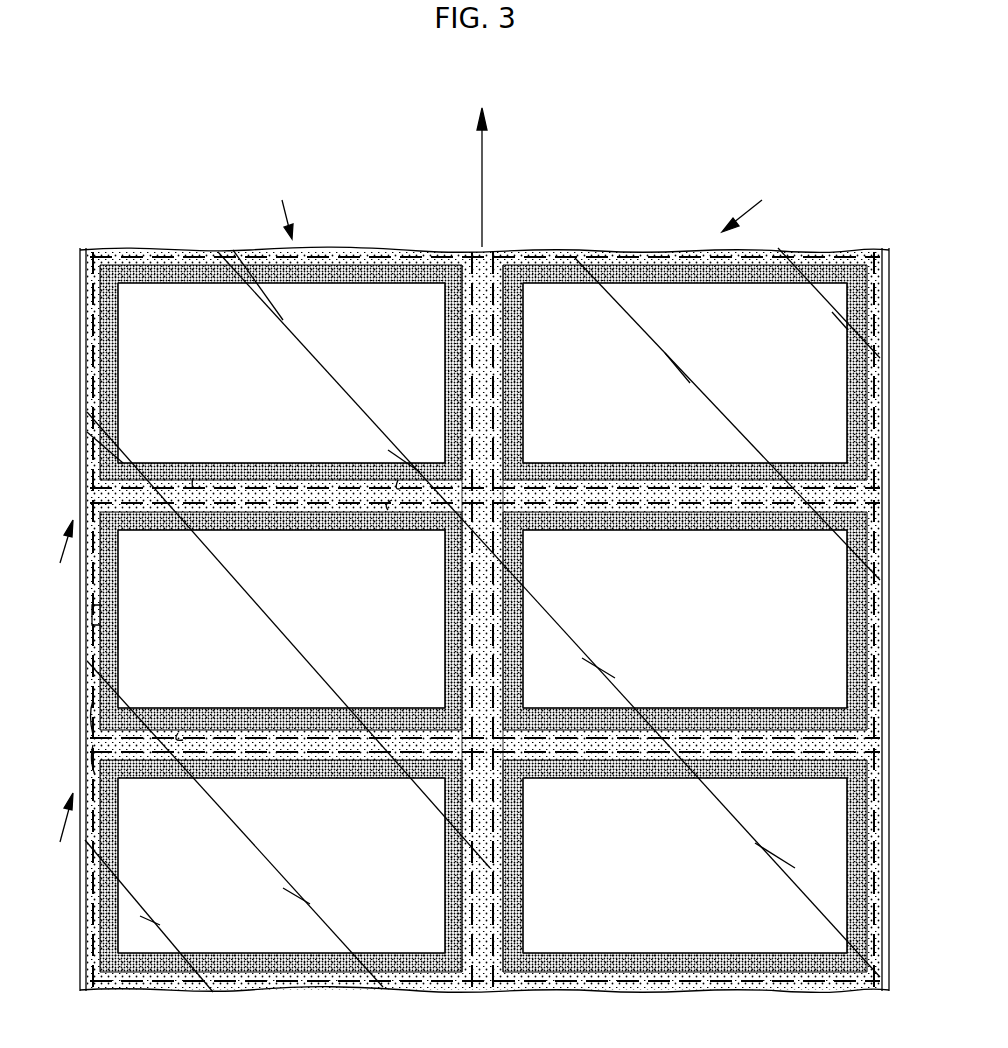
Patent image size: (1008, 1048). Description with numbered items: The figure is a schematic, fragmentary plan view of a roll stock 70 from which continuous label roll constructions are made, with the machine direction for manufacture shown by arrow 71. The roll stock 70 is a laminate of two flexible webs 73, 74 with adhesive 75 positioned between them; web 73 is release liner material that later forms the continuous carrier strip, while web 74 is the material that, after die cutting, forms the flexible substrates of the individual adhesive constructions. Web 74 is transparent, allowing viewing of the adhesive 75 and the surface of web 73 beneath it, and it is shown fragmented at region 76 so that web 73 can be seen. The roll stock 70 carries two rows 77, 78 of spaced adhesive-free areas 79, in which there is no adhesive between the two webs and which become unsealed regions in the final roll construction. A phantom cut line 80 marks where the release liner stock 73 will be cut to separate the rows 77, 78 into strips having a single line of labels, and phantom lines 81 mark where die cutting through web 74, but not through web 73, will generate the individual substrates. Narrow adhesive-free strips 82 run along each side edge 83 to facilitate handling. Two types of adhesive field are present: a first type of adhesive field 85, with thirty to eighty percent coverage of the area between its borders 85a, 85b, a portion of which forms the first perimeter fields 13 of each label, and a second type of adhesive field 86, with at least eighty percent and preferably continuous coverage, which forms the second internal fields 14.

The first perimeter adhesive field 13 is at (100, 613).
The second internal adhesive field 14 is at (110, 625).
The roll stock 70 is at (57, 553).
The arrow 71 is at (487, 178).
The flexible web 73 is at (88, 722).
The flexible web 74 is at (130, 641).
The adhesive 75 is at (95, 760).
The region 76 is at (57, 827).
The row 77 is at (278, 205).
The row 78 is at (756, 204).
The adhesive-free areas 79 is at (220, 404).
The cut line 80 is at (483, 277).
The phantom lines 81 is at (318, 252).
The adhesive-free strips 82 is at (86, 296).
The side edge 83 is at (85, 433).
The first type of adhesive field 85 is at (102, 257).
The border 85a is at (88, 495).
The border 85b is at (193, 478).
The second type of adhesive field 86 is at (115, 378).